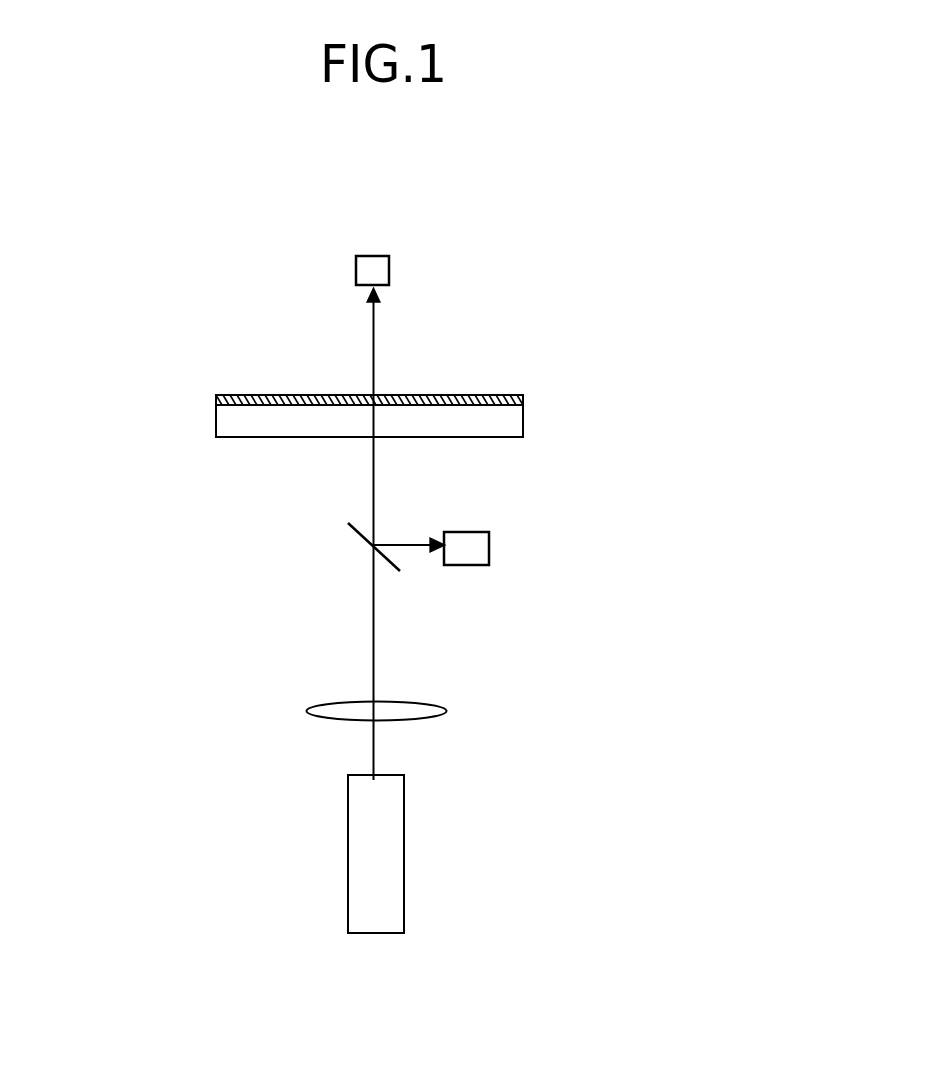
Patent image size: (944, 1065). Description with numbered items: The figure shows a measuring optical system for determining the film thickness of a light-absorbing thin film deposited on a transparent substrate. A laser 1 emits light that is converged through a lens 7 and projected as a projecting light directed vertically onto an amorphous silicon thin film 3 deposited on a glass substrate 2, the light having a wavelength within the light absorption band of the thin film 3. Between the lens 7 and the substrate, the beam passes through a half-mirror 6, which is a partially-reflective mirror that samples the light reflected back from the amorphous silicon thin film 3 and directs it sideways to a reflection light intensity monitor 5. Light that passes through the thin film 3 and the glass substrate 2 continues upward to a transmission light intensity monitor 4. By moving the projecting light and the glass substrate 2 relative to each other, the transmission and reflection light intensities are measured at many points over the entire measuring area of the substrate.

The laser 1 is at (298, 905).
The glass substrate 2 is at (557, 471).
The amorphous silicon thin film 3 is at (539, 321).
The transmission light intensity monitor 4 is at (215, 226).
The reflection light intensity monitor 5 is at (565, 633).
The half-mirror 6 is at (298, 605).
The lens 7 is at (294, 782).